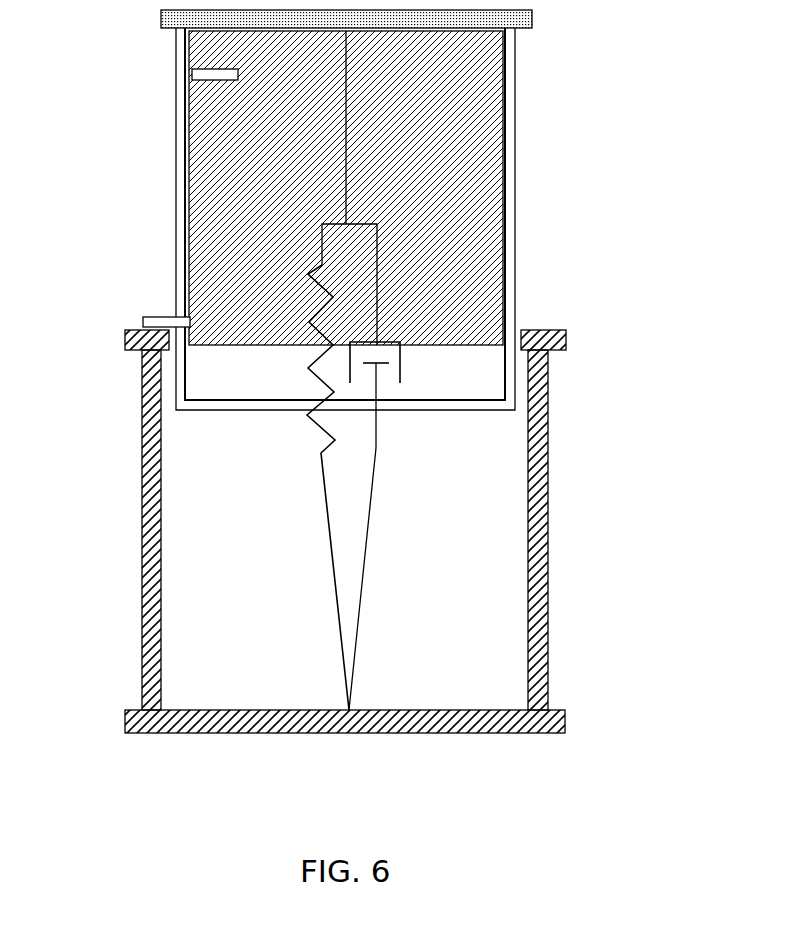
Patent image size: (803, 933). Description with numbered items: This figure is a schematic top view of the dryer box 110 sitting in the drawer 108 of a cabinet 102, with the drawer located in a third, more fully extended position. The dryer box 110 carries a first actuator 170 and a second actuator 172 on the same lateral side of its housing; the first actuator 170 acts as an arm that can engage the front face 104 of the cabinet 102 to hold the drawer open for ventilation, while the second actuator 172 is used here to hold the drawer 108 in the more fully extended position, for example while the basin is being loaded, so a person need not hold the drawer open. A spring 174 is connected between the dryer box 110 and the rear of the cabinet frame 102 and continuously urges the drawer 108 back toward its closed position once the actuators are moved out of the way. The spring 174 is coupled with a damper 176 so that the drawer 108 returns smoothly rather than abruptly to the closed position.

The cabinet 102 is at (547, 467).
The front face 104 is at (137, 328).
The drawer 108 is at (507, 105).
The dryer box 110 is at (470, 164).
The first actuator 170 is at (208, 76).
The second actuator 172 is at (162, 317).
The spring 174 is at (325, 433).
The damper 176 is at (402, 364).